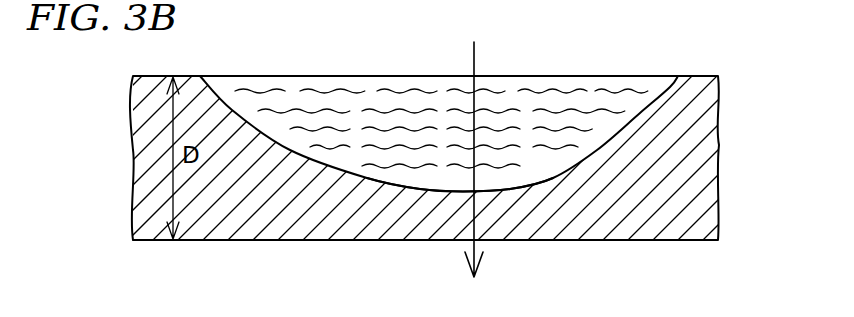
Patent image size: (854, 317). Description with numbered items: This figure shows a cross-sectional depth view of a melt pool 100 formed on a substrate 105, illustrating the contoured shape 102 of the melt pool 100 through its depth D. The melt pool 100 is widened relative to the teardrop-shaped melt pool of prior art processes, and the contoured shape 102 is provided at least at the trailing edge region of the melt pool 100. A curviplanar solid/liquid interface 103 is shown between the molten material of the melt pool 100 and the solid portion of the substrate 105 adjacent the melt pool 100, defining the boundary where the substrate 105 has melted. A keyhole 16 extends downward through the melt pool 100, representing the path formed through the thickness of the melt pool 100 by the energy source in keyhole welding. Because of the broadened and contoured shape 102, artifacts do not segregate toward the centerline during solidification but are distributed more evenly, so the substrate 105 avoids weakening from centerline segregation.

The melt pool 100 is at (293, 104).
The keyhole 16 is at (477, 63).
The substrate 105 is at (700, 151).
The contoured shape 102 is at (368, 182).
The curviplanar solid/liquid interface 103 is at (545, 183).